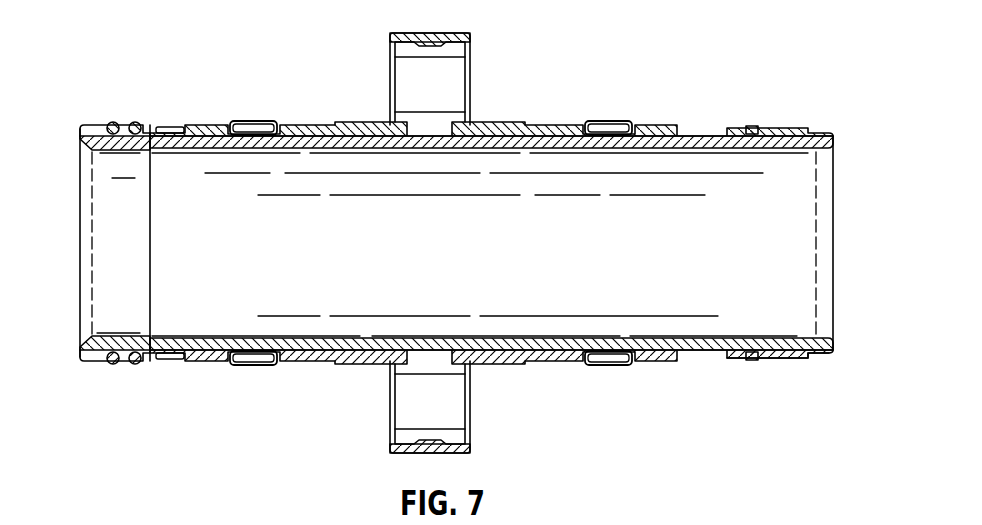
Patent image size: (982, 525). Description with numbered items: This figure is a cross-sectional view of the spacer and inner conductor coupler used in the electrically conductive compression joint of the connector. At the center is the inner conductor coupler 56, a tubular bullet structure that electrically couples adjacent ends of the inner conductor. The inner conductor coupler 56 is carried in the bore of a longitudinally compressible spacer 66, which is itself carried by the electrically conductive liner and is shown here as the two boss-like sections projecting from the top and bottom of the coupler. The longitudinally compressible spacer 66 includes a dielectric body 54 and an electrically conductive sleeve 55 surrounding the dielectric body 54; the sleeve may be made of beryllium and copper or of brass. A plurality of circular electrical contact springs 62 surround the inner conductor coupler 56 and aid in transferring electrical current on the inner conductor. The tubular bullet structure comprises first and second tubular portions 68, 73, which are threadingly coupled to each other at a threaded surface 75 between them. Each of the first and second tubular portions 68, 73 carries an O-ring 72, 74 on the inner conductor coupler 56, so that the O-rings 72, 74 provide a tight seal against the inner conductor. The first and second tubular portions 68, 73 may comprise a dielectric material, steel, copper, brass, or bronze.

The dielectric body 54 is at (450, 82).
The electrically conductive sleeve 55 is at (470, 33).
The inner conductor coupler 56 is at (320, 362).
The circular electrical contact springs 62 is at (256, 121).
The longitudinally compressible spacer 66 is at (480, 420).
The first tubular portion 68 is at (773, 366).
The O-ring 72 is at (752, 128).
The second tubular portion 73 is at (100, 363).
The O-ring 74 is at (133, 364).
The threaded surface 75 is at (171, 126).